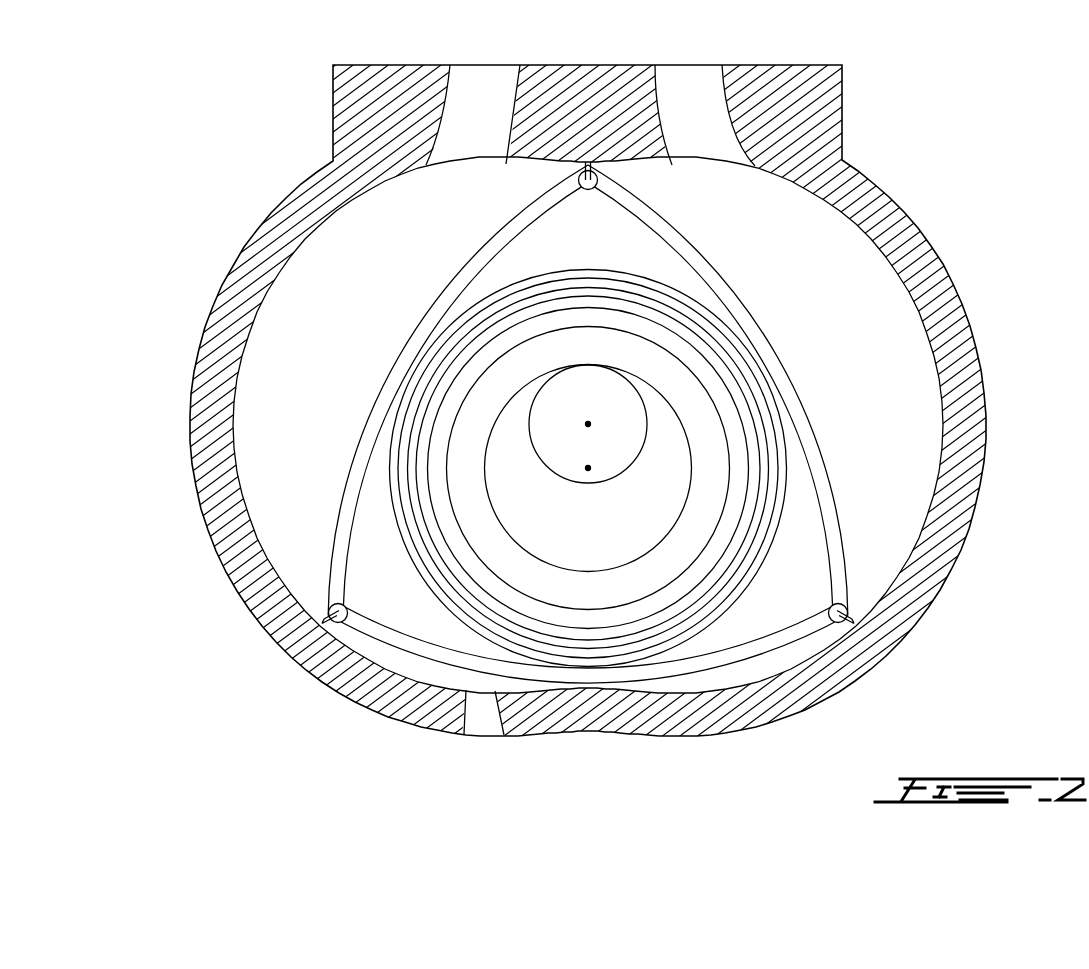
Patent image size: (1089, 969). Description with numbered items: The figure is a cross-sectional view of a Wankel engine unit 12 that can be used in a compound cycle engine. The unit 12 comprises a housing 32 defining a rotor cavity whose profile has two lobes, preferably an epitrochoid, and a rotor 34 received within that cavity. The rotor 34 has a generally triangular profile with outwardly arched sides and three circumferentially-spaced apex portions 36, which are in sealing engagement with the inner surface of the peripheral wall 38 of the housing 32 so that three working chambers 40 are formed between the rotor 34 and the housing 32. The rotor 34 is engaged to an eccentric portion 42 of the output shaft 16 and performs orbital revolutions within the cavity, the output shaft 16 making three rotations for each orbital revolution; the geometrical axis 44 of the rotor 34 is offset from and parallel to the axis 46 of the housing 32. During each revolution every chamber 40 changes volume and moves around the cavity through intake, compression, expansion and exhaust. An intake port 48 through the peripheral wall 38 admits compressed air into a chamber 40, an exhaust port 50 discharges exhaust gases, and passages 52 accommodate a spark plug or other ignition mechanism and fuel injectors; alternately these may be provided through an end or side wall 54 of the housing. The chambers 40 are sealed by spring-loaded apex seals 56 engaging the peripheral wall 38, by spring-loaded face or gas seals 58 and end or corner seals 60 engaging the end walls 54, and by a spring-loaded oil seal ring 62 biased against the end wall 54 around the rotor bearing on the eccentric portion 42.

The unit 12 is at (178, 188).
The output shaft 16 is at (612, 453).
The housing 32 is at (903, 212).
The rotor 34 is at (613, 465).
The apex portions 36 is at (858, 627).
The peripheral wall 38 is at (943, 310).
The working chambers 40 is at (334, 347).
The eccentric portion 42 is at (610, 540).
The geometrical axis 44 is at (587, 469).
The axis 46 is at (587, 424).
The intake port 48 is at (700, 137).
The exhaust port 50 is at (473, 133).
The passages 52 is at (485, 715).
The end wall 54 is at (908, 483).
The apex seals 56 is at (322, 622).
The face seals 58 is at (347, 527).
The corner seals 60 is at (330, 610).
The oil seal ring 62 is at (683, 630).